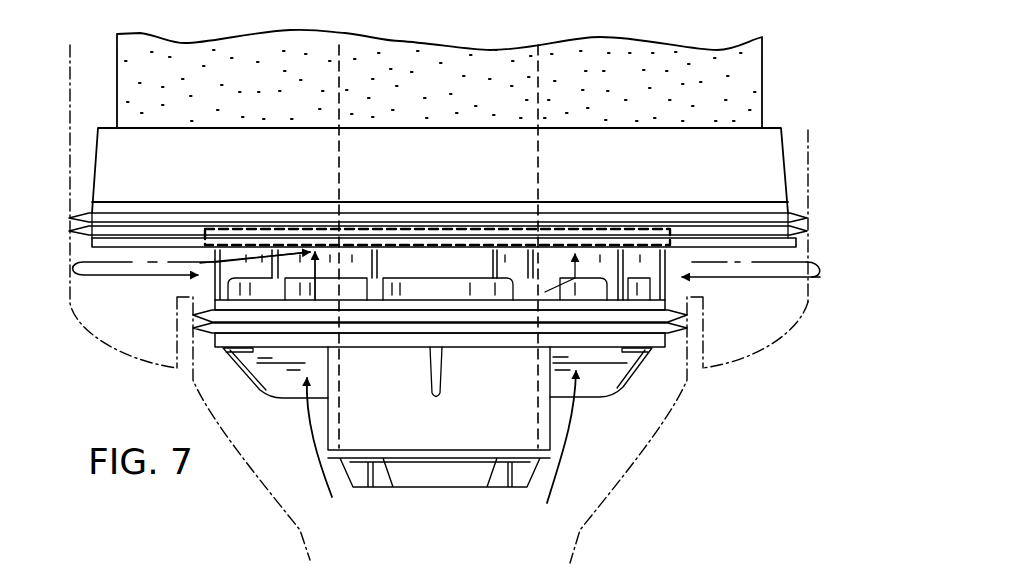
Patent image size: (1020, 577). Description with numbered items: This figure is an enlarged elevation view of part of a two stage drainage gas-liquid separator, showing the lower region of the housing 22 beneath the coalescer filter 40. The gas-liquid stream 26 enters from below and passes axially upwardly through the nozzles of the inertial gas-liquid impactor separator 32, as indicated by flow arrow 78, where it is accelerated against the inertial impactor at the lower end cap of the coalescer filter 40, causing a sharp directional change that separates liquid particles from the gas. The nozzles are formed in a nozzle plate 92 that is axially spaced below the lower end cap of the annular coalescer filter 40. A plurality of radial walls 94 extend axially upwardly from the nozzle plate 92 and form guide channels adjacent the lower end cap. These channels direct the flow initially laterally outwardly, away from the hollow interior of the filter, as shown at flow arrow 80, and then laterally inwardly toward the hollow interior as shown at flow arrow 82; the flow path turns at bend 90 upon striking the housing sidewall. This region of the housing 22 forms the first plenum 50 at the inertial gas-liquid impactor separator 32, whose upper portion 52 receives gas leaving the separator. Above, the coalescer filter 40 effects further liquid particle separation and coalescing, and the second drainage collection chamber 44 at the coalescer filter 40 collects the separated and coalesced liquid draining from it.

The coalescer filter 40 is at (605, 37).
The second drainage collection chamber 44 is at (798, 145).
The housing 22 is at (810, 165).
The upper portion of first plenum 52 is at (795, 252).
The inertial gas-liquid impactor separator 32 is at (567, 237).
The flow arrow 78 is at (560, 272).
The radial walls 94 is at (662, 252).
The flow arrow 80 is at (753, 265).
The flow arrow 82 is at (775, 278).
The bend 90 is at (807, 275).
The nozzle plate 92 is at (605, 305).
The gas-liquid stream 26 is at (558, 482).
The first plenum 50 is at (768, 328).